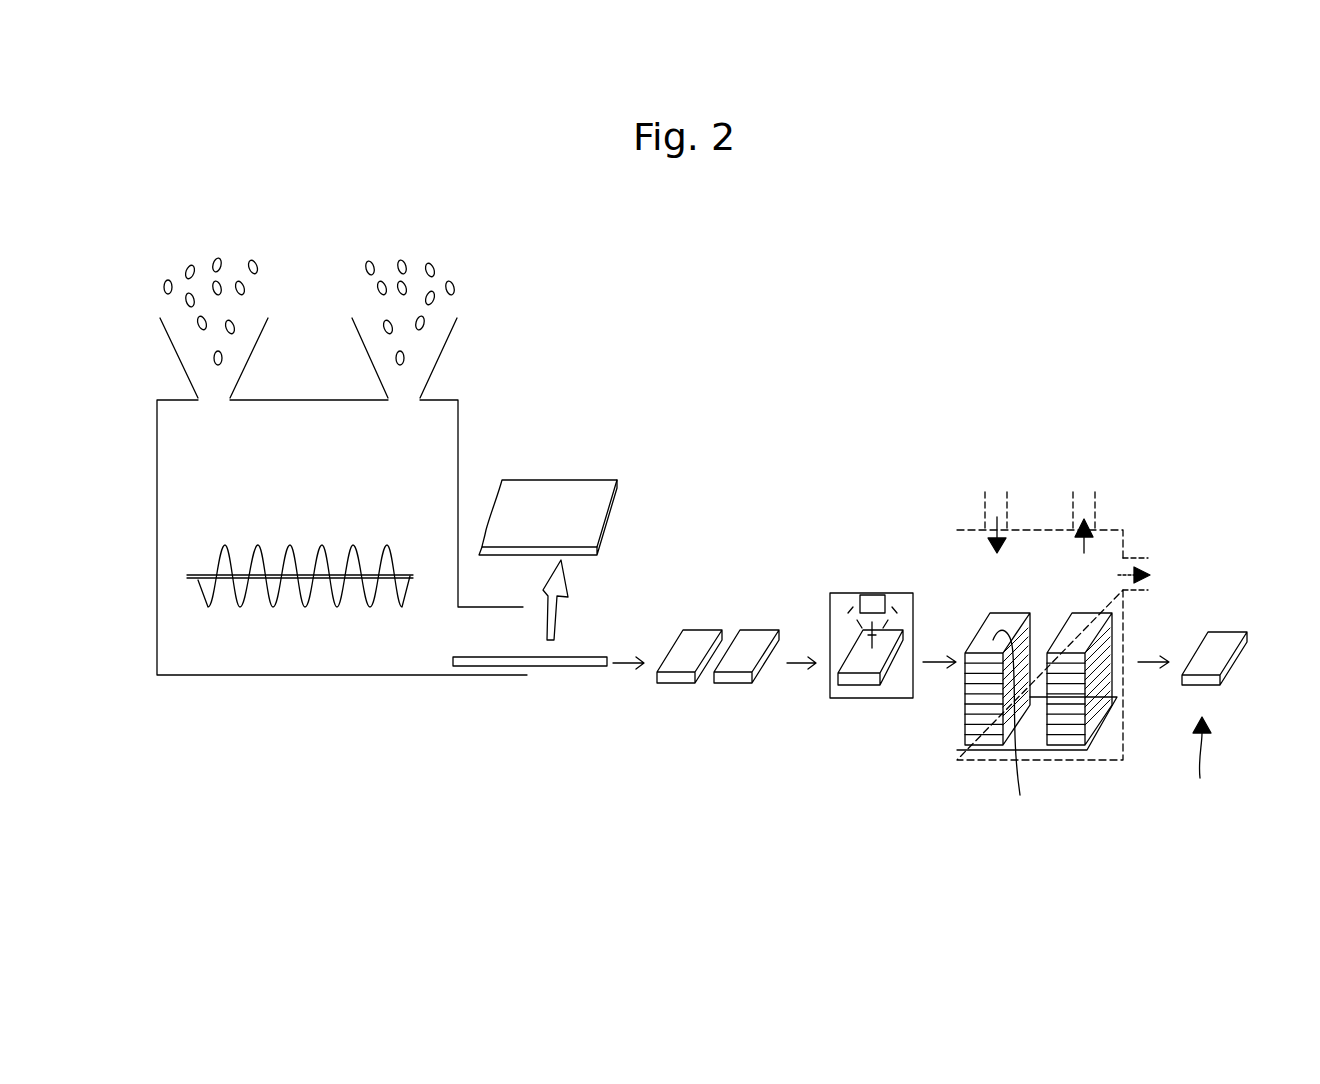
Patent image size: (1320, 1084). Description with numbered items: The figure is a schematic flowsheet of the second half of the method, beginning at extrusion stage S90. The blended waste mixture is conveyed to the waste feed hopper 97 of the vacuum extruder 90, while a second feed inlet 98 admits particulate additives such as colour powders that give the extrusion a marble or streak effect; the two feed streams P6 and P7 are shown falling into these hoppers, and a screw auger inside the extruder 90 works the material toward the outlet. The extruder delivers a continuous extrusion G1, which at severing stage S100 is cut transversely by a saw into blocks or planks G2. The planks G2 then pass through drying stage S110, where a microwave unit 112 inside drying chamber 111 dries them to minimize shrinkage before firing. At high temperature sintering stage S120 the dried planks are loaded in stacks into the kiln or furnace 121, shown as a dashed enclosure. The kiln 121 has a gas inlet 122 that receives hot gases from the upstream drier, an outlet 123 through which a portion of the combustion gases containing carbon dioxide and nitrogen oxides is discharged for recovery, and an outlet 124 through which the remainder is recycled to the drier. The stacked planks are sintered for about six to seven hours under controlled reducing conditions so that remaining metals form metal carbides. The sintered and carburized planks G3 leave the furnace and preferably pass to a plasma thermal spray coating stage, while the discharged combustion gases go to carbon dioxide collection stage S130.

The vacuum extruder 90 is at (202, 677).
The waste feed hopper 97 is at (250, 360).
The feed inlet 98 is at (440, 360).
The first raw material P6 is at (190, 267).
The second raw material P7 is at (403, 267).
The extrusion stage S90 is at (317, 703).
The extrusion G1 is at (572, 493).
The severing stage S100 is at (724, 592).
The blocks or planks G2 is at (677, 685).
The drying stage S110 is at (864, 570).
The heating chamber 111 is at (887, 628).
The microwave unit 112 is at (878, 592).
The high temperature sintering stage S120 is at (1138, 515).
The kiln or furnace 121 is at (1040, 530).
The gas inlet 122 is at (985, 530).
The outlet 123 is at (1095, 520).
The outlet 124 is at (1141, 558).
The sintered and carburized planks G3 is at (1214, 645).
The carbon dioxide collection stage S130 is at (1193, 780).